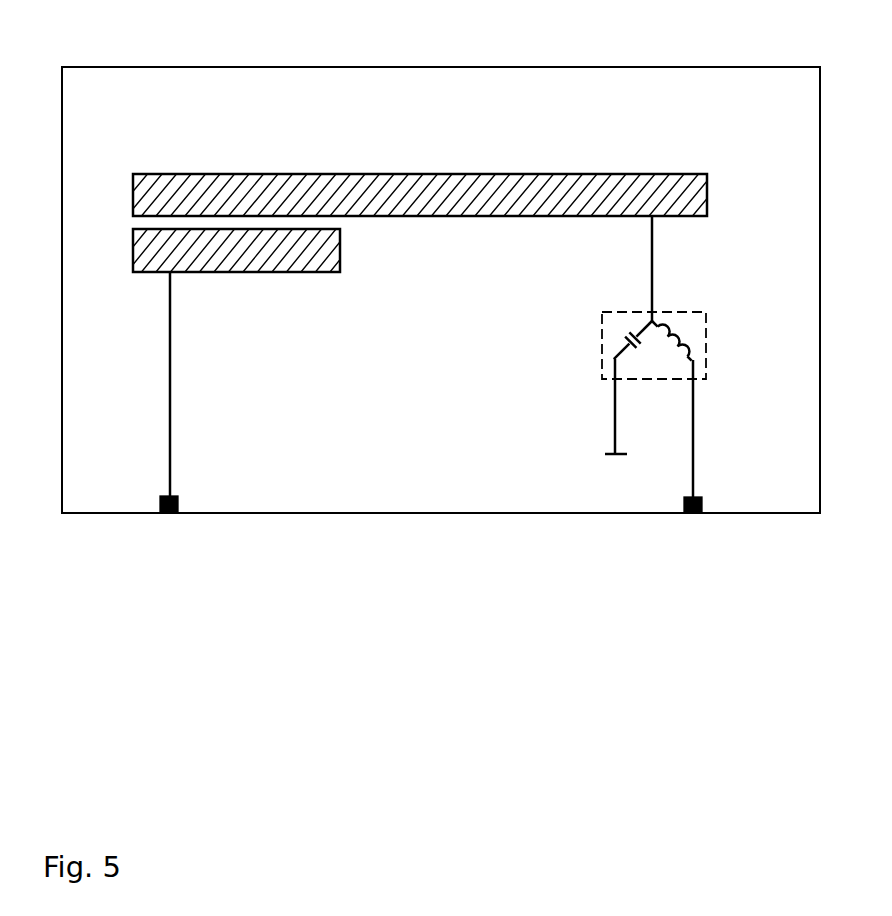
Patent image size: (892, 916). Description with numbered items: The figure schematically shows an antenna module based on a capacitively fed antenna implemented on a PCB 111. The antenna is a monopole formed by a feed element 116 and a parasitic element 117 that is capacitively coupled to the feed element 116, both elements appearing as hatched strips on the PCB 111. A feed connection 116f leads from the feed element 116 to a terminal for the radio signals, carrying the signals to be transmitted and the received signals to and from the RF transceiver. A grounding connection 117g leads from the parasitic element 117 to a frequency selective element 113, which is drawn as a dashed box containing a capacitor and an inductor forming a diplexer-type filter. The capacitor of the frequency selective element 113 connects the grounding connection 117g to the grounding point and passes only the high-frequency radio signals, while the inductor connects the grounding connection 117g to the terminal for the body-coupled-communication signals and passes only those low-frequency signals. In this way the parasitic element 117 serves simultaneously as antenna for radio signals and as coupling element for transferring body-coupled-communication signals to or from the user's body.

The PCB 111 is at (740, 67).
The parasitic element 117 is at (668, 173).
The feed element 116 is at (300, 273).
The feed connection 116f is at (171, 377).
The grounding connection 117g is at (650, 285).
The frequency selective element 113 is at (688, 309).